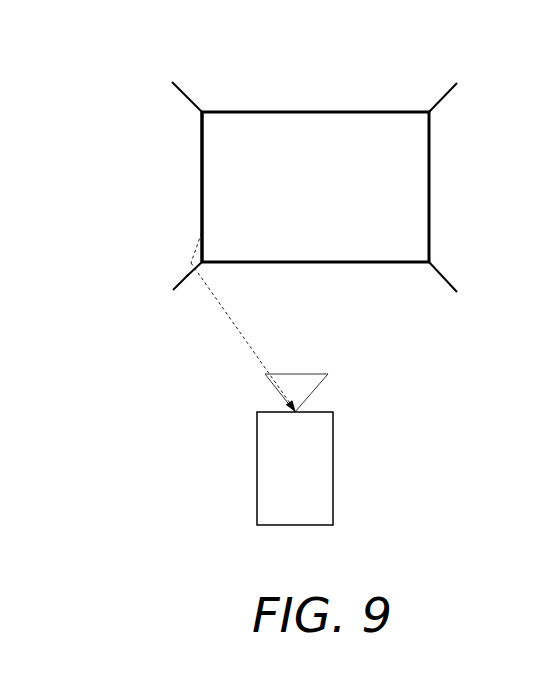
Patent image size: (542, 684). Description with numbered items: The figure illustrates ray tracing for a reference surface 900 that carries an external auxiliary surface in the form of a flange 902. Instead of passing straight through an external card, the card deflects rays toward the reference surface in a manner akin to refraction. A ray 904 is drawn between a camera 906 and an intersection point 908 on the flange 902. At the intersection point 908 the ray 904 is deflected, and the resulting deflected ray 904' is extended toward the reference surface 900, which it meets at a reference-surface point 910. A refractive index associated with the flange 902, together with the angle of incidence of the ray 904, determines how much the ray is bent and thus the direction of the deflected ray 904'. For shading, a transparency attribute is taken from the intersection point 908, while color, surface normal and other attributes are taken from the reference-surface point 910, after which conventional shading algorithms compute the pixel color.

The reference surface 900 is at (320, 112).
The flange 902 is at (175, 289).
The ray 904 is at (269, 337).
The deflected ray 904' is at (114, 234).
The camera 906 is at (313, 508).
The intersection point 908 is at (197, 274).
The reference-surface point 910 is at (202, 223).